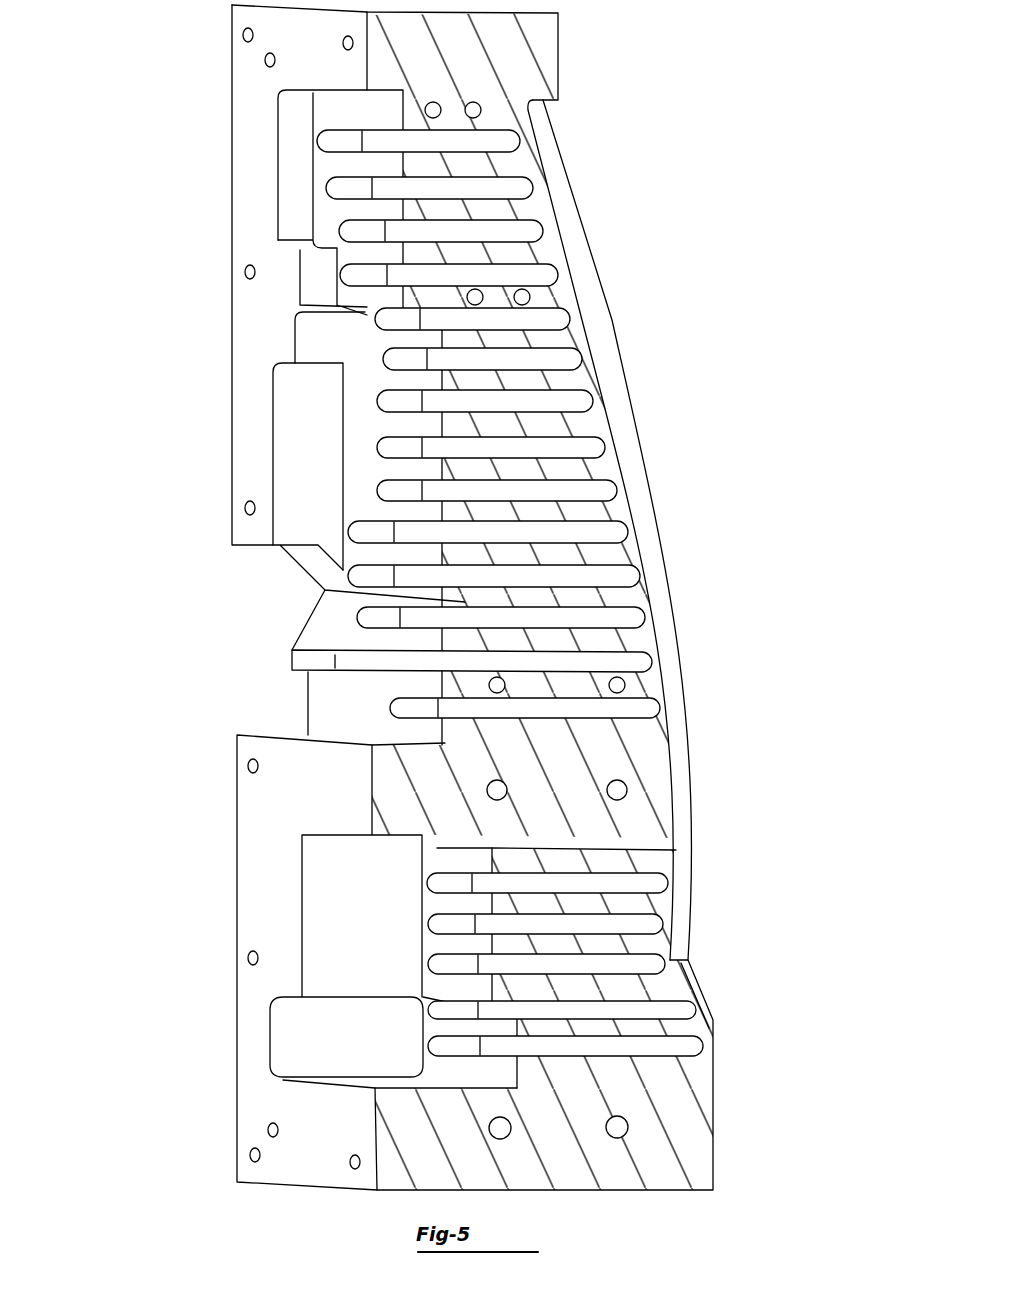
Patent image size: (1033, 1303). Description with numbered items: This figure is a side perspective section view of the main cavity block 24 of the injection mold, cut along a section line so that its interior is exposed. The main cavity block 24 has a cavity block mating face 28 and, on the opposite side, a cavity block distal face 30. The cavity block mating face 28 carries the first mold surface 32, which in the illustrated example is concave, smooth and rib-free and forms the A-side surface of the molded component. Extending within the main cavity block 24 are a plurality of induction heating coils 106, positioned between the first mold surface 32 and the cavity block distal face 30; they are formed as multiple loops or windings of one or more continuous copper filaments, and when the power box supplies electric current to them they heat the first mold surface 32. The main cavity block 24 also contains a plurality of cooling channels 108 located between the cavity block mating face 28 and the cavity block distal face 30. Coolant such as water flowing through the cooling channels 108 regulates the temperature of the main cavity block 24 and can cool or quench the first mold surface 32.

The main cavity block 24 is at (106, 247).
The cavity block mating face 28 is at (713, 1098).
The cavity block distal face 30 is at (250, 252).
The first mold surface 32 is at (583, 258).
The induction heating coils 106 is at (538, 233).
The cooling channels 108 is at (473, 103).